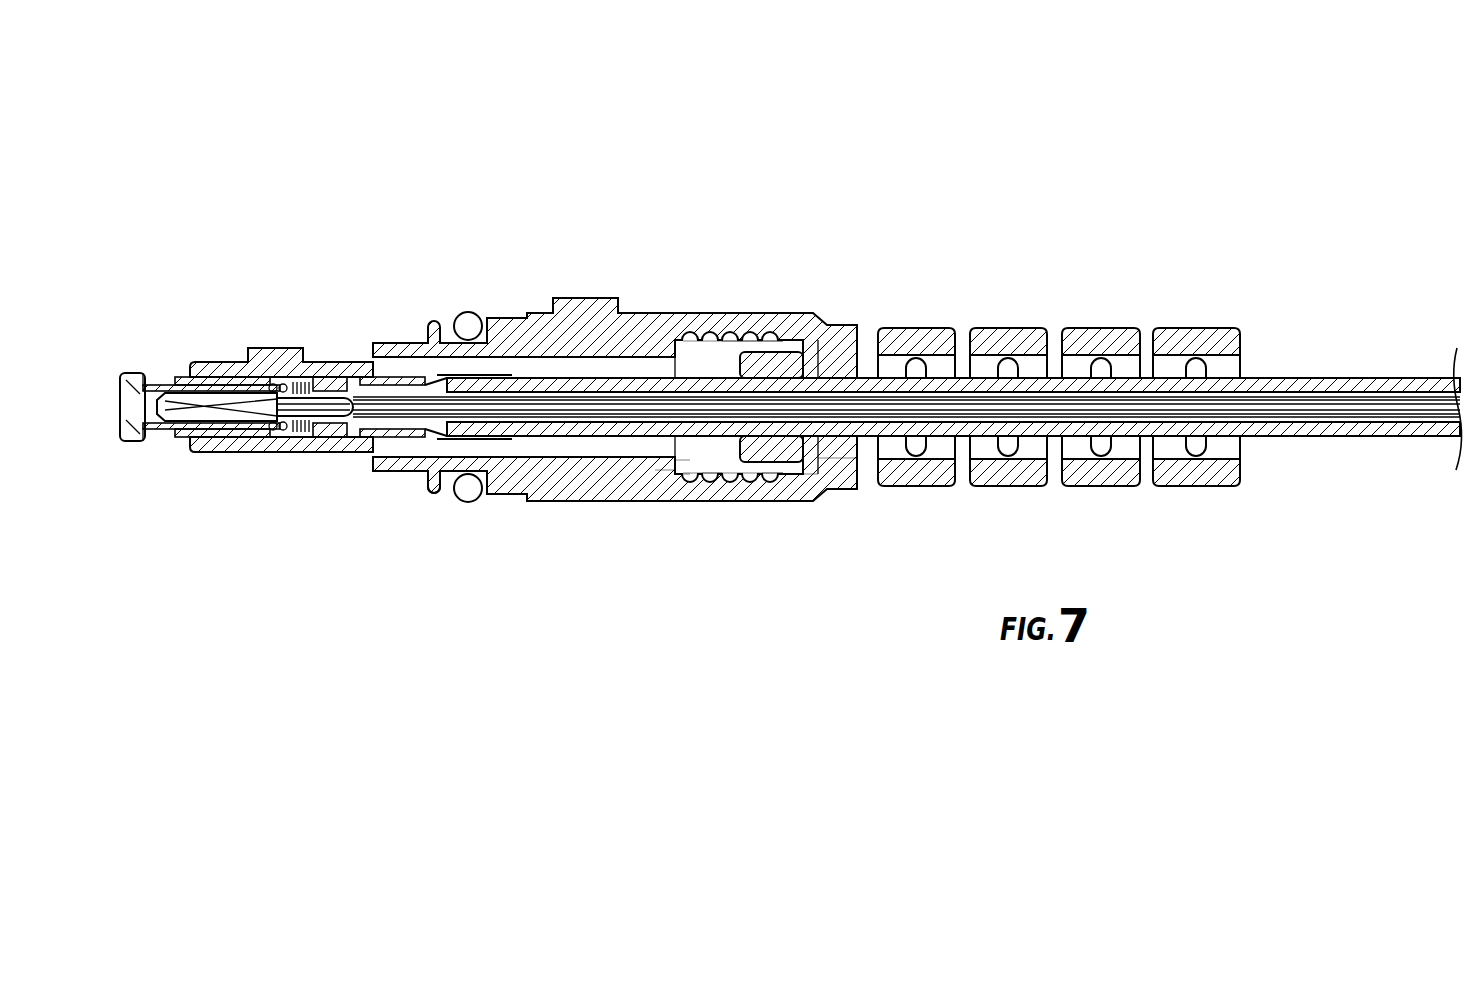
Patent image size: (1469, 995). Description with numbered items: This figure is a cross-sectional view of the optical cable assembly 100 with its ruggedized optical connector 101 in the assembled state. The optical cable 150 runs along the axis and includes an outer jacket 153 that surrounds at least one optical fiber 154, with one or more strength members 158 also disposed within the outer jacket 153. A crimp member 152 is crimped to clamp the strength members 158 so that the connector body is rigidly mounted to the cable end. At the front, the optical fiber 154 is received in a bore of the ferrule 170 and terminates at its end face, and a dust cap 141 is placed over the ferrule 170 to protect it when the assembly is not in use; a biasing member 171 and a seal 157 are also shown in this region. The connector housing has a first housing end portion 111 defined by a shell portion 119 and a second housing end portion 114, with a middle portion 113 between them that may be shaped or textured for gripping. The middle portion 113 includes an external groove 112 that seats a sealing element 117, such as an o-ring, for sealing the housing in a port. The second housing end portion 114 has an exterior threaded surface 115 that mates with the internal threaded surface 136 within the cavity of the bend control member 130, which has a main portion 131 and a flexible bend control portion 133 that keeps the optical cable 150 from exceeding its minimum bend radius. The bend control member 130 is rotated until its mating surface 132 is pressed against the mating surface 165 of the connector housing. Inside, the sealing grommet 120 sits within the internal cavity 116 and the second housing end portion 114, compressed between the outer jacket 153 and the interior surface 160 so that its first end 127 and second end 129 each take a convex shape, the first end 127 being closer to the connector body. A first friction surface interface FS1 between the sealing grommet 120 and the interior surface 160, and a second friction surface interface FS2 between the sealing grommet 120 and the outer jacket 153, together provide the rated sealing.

The optical cable assembly 100 is at (778, 345).
The optical connector 101 is at (520, 358).
The first housing end portion 111 is at (290, 340).
The external groove 112 is at (445, 492).
The middle portion 113 is at (568, 288).
The second housing end portion 114 is at (757, 496).
The exterior threaded surface 115 is at (695, 337).
The internal cavity 116 is at (655, 482).
The sealing element 117 is at (472, 313).
The shell portion 119 is at (256, 360).
The sealing grommet 120 is at (802, 478).
The first end 127 is at (685, 339).
The second end 129 is at (810, 457).
The bend control member 130 is at (1027, 347).
The main portion 131 is at (687, 542).
The mating surface 132 is at (672, 344).
The flexible bend control portion 133 is at (815, 297).
The internal threaded surface 136 is at (730, 338).
The dust cap 141 is at (133, 357).
The optical cable 150 is at (907, 400).
The crimp member 152 is at (427, 377).
The outer jacket 153 is at (1400, 378).
The optical fiber 154 is at (1405, 405).
The seal member 157 is at (733, 369).
The strength member 158 is at (437, 378).
The interior surface 160 is at (752, 338).
The mating surface 165 is at (686, 526).
The ferrule 170 is at (172, 425).
The spring 171 is at (275, 432).
The first friction surface interface FS1 is at (780, 338).
The second friction surface interface FS2 is at (797, 434).